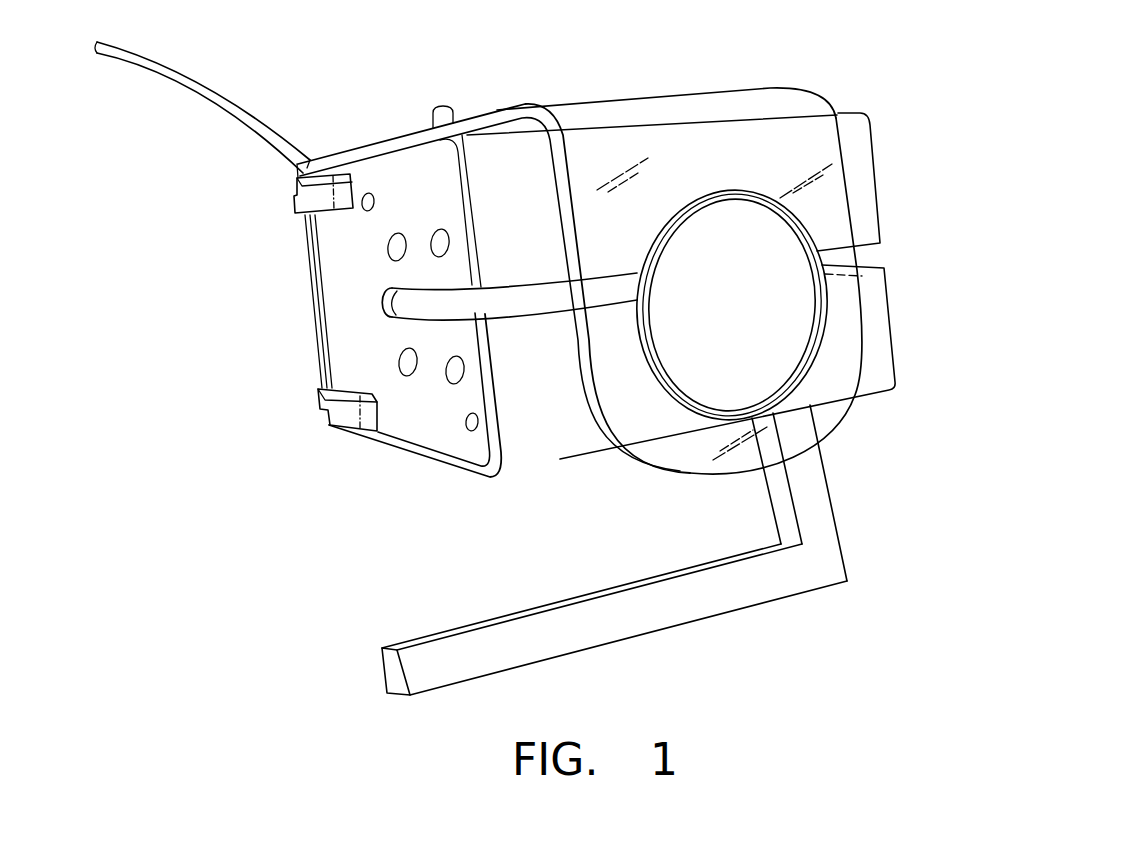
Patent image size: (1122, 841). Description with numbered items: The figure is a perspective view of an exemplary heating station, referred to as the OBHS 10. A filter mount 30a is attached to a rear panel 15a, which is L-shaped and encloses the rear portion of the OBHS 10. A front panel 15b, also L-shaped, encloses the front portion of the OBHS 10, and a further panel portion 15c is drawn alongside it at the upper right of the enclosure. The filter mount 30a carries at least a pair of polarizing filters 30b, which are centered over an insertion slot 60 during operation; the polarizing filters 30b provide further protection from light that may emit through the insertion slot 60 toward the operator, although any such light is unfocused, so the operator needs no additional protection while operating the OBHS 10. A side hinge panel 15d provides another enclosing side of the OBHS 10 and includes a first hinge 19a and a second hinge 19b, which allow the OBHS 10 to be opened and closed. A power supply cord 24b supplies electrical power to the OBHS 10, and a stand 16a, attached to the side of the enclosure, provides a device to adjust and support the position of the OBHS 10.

The OBHS 10 is at (833, 46).
The power supply cord 24b is at (172, 67).
The rear panel 15a is at (493, 148).
The front panel 15b is at (885, 380).
The bracket upper strip 15c is at (858, 164).
The side hinge panel 15d is at (327, 278).
The first hinge 19a is at (336, 414).
The second hinge 19b is at (297, 205).
The filter mount 30a is at (537, 105).
The polarizing filters 30b is at (727, 197).
The insertion slot 60 is at (390, 300).
The stand 16a is at (725, 596).